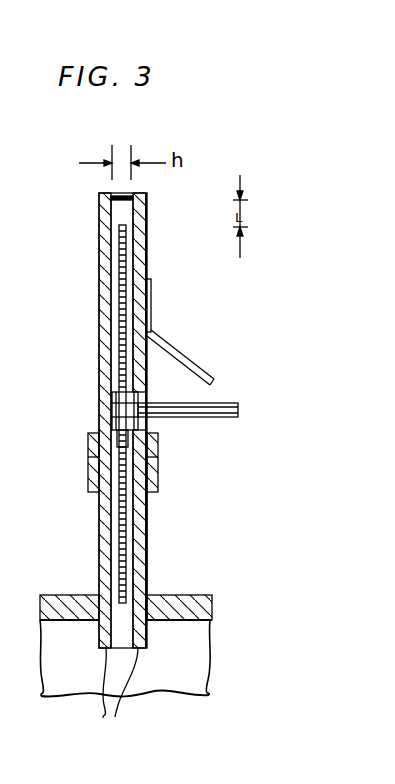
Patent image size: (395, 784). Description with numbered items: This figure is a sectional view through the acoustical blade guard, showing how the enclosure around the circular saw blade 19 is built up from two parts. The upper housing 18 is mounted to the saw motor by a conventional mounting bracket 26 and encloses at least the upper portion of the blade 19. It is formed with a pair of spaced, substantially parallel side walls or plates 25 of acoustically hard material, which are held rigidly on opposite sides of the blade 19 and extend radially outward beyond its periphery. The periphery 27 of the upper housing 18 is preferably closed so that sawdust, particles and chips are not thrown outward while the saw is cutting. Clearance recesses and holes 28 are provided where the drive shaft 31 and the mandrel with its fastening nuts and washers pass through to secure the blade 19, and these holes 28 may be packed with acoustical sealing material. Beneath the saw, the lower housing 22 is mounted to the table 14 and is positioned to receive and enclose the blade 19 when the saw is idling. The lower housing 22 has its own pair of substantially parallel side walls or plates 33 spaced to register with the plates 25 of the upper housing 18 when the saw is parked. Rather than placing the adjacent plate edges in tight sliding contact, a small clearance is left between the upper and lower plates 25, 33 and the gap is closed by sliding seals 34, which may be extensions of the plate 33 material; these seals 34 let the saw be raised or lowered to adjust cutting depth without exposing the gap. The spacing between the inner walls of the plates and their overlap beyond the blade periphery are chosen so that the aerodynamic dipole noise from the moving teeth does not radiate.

The table 14 is at (64, 606).
The upper housing 18 is at (100, 218).
The circular saw blade 19 is at (127, 238).
The lower housing 22 is at (157, 573).
The side walls or plates 25 is at (100, 256).
The mounting bracket 26 is at (186, 358).
The periphery 27 is at (121, 197).
The clearance recesses and holes 28 is at (110, 405).
The drive shaft 31 is at (208, 418).
The side walls or plates 33 is at (120, 699).
The sliding seals 34 is at (88, 480).